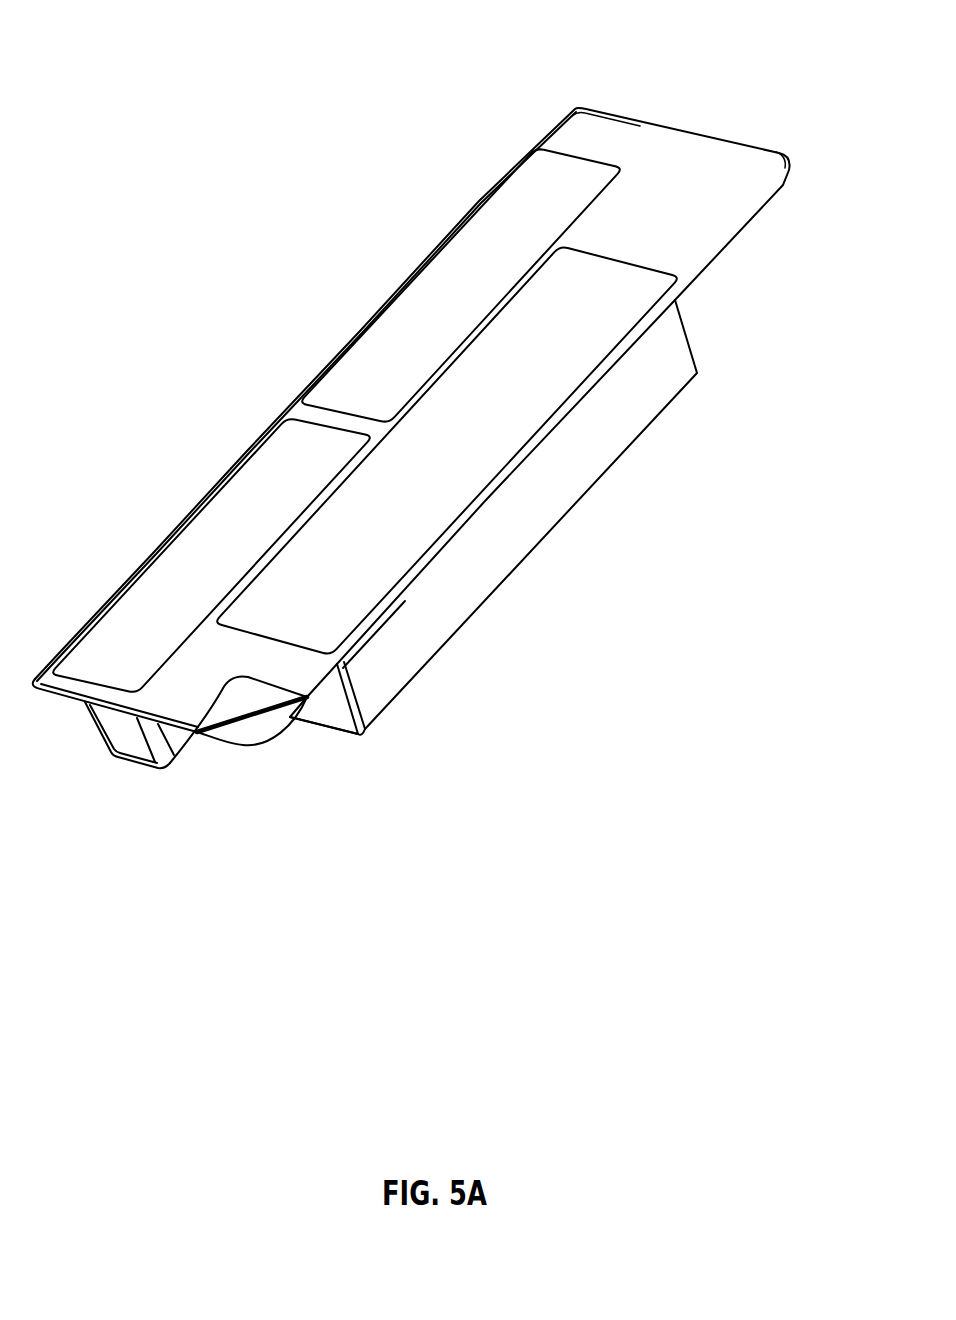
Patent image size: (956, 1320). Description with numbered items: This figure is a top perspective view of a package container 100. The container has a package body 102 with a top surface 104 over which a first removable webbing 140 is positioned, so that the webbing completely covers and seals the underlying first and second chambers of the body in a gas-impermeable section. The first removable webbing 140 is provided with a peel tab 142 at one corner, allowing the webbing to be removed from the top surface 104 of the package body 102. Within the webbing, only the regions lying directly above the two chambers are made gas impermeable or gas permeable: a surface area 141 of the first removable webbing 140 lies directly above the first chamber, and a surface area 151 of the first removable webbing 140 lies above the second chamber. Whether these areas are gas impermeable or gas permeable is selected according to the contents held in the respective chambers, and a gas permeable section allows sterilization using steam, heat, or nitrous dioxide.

The package container 100 is at (197, 68).
The package body 102 is at (342, 350).
The top surface 104 is at (272, 725).
The first removable webbing 140 is at (697, 235).
The surface area 141 is at (478, 245).
The peel tab 142 is at (243, 697).
The surface area 151 is at (573, 358).